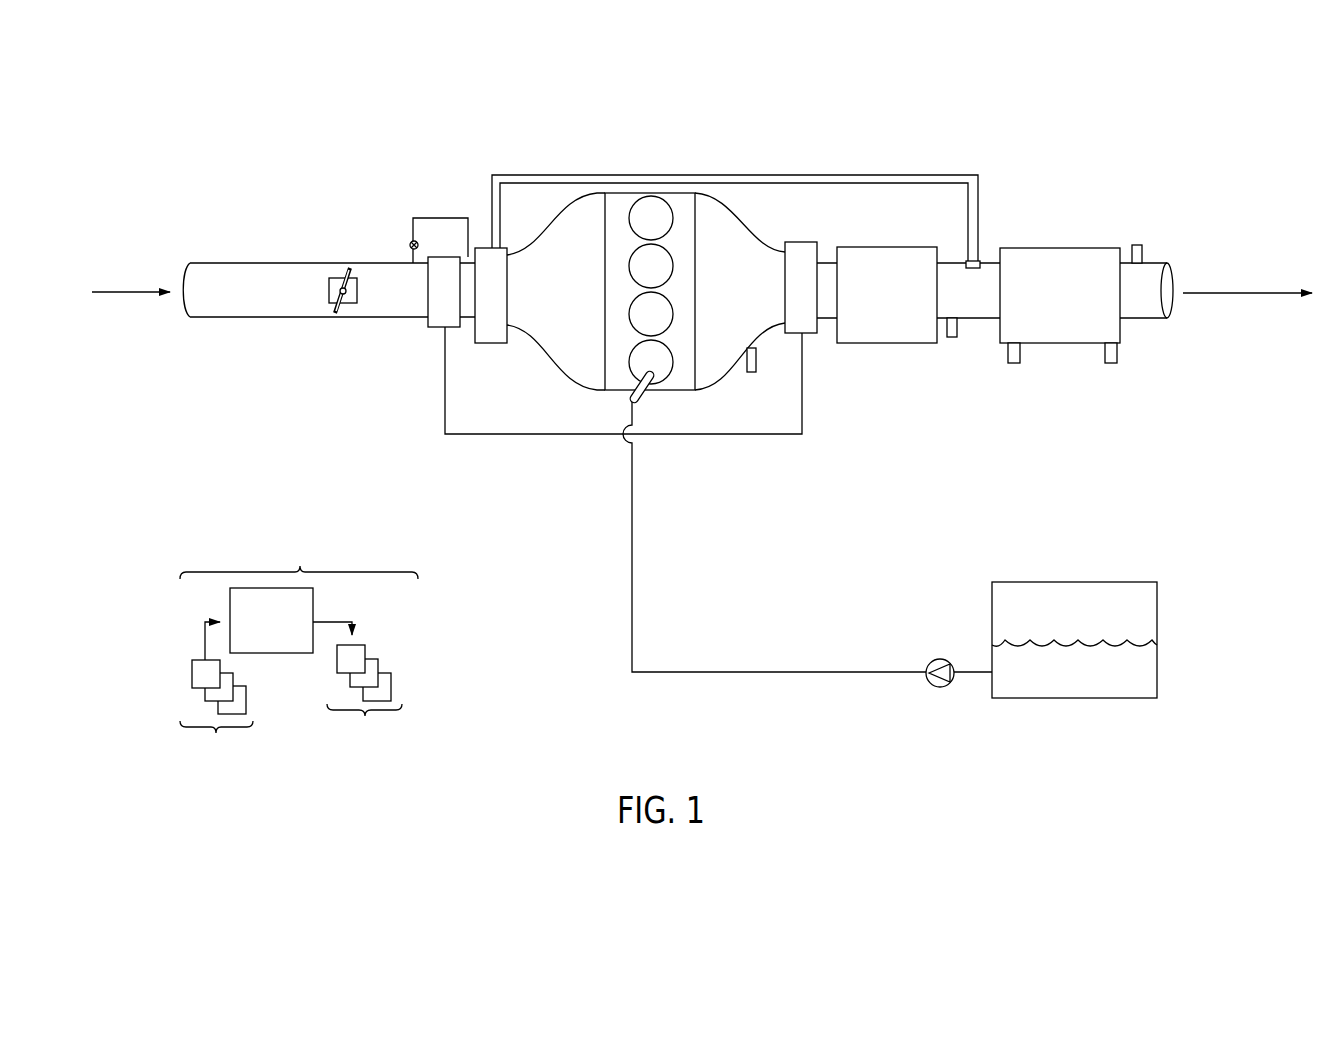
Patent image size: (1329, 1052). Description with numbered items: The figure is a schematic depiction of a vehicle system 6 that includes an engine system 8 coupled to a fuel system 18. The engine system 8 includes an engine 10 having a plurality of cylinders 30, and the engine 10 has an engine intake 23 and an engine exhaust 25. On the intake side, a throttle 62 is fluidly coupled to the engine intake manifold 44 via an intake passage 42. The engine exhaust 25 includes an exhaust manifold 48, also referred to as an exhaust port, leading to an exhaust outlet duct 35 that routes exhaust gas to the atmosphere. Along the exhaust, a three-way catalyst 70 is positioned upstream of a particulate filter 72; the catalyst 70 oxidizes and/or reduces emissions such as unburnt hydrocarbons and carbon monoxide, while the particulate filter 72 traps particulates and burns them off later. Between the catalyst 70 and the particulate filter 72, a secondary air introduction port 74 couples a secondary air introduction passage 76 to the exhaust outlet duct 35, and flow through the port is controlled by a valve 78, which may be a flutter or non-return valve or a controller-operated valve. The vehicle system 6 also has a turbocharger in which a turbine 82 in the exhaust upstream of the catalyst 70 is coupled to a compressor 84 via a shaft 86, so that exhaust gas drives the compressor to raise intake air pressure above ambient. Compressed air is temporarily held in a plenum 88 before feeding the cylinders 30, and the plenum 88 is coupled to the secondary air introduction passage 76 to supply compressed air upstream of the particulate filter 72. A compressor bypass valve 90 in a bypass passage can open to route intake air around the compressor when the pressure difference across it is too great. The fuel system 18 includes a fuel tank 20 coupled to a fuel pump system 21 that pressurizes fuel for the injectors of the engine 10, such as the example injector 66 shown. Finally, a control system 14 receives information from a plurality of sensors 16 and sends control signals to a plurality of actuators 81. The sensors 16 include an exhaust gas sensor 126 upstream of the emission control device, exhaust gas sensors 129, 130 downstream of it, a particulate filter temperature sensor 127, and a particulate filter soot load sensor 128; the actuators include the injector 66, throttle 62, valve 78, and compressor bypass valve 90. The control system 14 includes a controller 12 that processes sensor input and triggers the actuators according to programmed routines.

The vehicle system 6 is at (168, 135).
The engine system 8 is at (818, 123).
The engine 10 is at (693, 273).
The controller 12 is at (271, 620).
The control system 14 is at (299, 551).
The sensors 16 is at (216, 697).
The fuel system 18 is at (1083, 740).
The fuel tank 20 is at (1157, 680).
The fuel pump system 21 is at (942, 660).
The engine intake 23 is at (380, 202).
The engine exhaust 25 is at (1003, 139).
The cylinders 30 is at (668, 212).
The exhaust outlet duct 35 is at (1165, 263).
The intake passage 42 is at (374, 318).
The engine intake manifold 44 is at (549, 303).
The exhaust manifold 48 is at (747, 303).
The throttle 62 is at (357, 297).
The injector 66 is at (647, 398).
The three-way catalyst 70 is at (887, 247).
The particulate filter 72 is at (1081, 248).
The secondary air introduction port 74 is at (965, 260).
The secondary air introduction passage 76 is at (940, 175).
The valve 78 is at (981, 261).
The actuators 81 is at (359, 690).
The turbine 82 is at (804, 242).
The compressor 84 is at (438, 257).
The shaft 86 is at (517, 434).
The plenum 88 is at (507, 252).
The compressor bypass valve 90 is at (410, 245).
The exhaust gas sensor 126 is at (757, 350).
The particulate filter temperature sensor 127 is at (1008, 355).
The particulate filter soot load sensor 128 is at (1105, 353).
The exhaust gas sensor 129 is at (957, 337).
The exhaust gas sensor 130 is at (1142, 248).